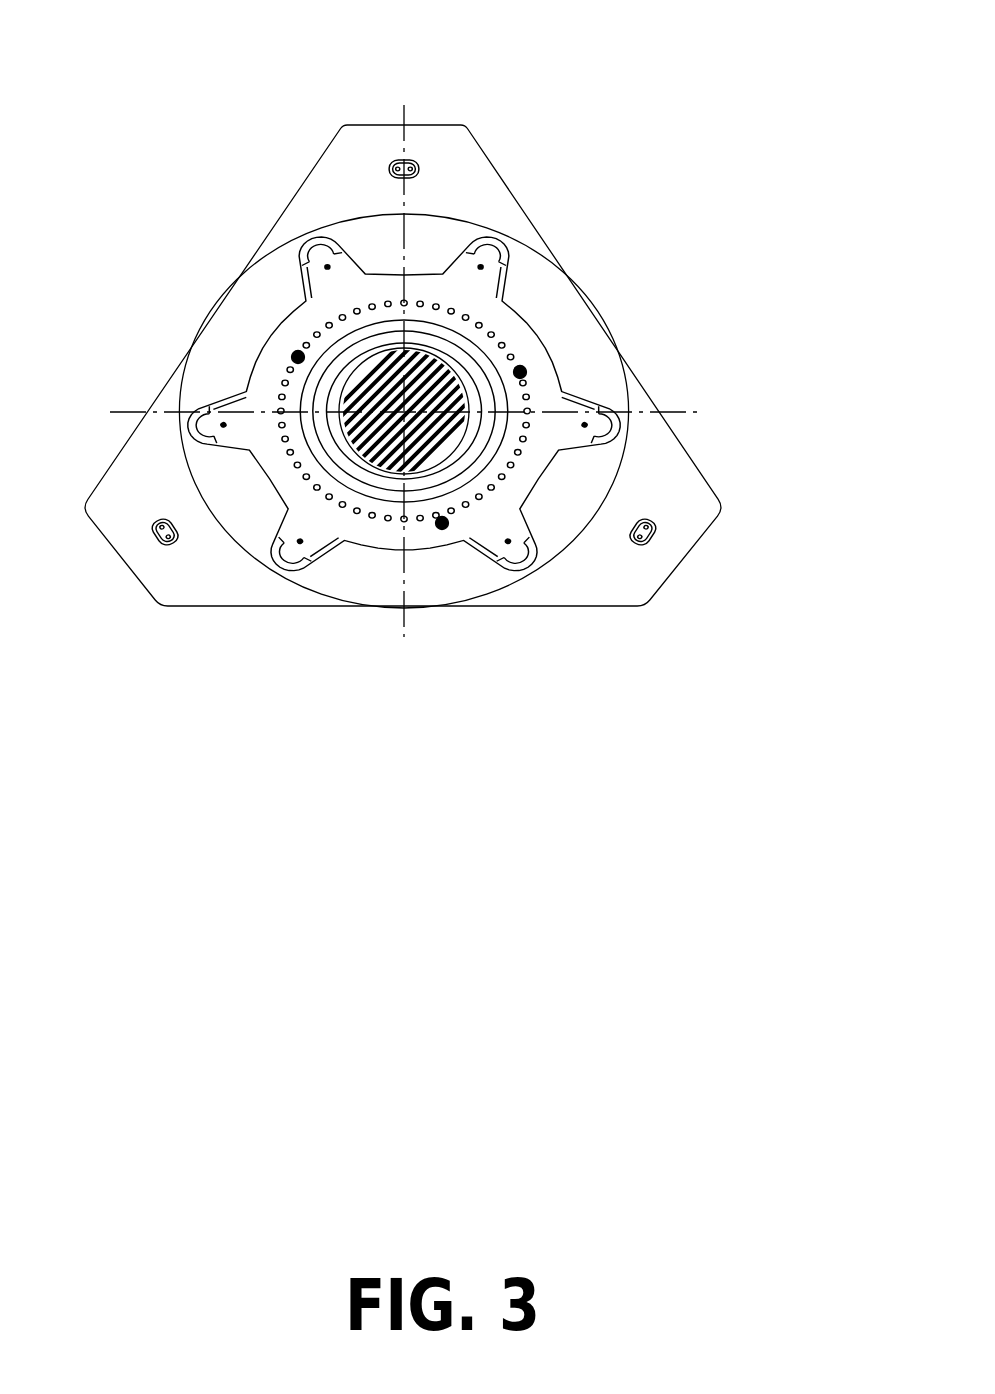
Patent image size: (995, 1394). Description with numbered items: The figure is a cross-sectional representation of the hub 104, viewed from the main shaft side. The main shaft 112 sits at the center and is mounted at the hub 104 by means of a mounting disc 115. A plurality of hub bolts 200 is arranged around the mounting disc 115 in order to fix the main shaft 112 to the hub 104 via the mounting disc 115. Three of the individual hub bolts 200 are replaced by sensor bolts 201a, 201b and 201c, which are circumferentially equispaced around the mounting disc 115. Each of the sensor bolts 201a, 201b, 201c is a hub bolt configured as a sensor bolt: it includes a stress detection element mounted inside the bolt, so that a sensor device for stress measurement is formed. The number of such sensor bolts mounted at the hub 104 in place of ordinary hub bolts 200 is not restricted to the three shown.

The hub 104 is at (461, 146).
The mounting disc 115 is at (273, 283).
The hub bolts 200 is at (531, 338).
The sensor bolt 201a is at (298, 357).
The sensor bolt 201b is at (520, 372).
The sensor bolt 201c is at (442, 523).
The main shaft 112 is at (385, 425).